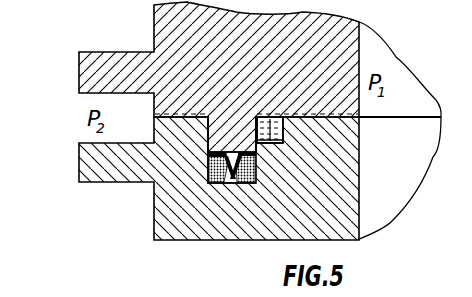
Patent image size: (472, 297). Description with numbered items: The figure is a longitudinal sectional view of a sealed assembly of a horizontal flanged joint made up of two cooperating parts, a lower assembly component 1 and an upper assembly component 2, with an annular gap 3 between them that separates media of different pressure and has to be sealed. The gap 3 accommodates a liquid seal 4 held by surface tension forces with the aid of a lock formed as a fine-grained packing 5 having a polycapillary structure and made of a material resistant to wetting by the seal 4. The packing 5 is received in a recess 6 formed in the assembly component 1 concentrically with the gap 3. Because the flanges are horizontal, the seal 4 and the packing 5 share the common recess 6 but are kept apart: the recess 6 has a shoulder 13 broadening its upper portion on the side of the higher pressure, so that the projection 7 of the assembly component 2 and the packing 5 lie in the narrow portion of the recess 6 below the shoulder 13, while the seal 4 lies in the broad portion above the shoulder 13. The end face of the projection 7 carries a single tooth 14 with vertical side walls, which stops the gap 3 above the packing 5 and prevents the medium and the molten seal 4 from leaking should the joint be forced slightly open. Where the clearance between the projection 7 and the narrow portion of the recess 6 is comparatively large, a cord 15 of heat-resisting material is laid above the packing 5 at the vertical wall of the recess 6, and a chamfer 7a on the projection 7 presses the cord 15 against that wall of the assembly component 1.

The assembly component 1 is at (128, 168).
The assembly component 2 is at (173, 46).
The annular gap 3 is at (399, 118).
The liquid seal 4 is at (257, 117).
The fine-grained packing 5 is at (211, 181).
The recess 6 is at (207, 181).
The projection 7 is at (218, 131).
The chamfer 7a is at (206, 150).
The shoulder 13 is at (283, 143).
The tooth 14 is at (238, 172).
The cord 15 is at (208, 172).